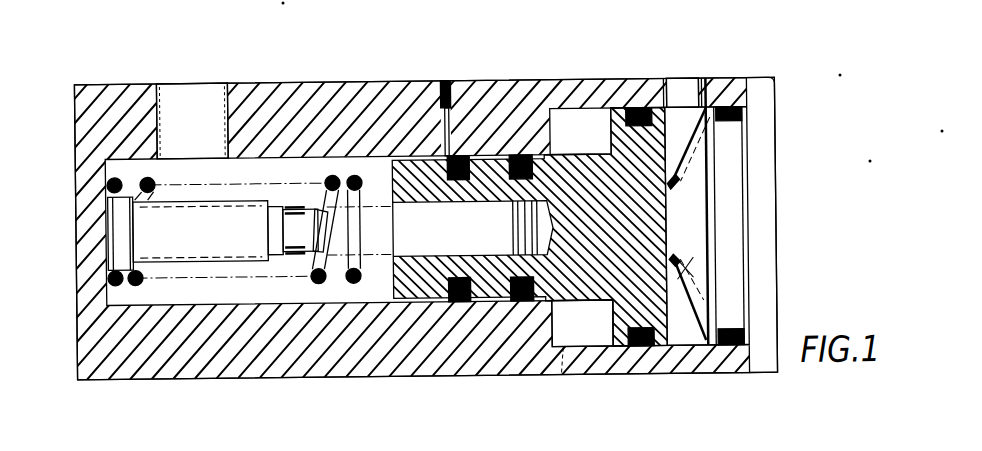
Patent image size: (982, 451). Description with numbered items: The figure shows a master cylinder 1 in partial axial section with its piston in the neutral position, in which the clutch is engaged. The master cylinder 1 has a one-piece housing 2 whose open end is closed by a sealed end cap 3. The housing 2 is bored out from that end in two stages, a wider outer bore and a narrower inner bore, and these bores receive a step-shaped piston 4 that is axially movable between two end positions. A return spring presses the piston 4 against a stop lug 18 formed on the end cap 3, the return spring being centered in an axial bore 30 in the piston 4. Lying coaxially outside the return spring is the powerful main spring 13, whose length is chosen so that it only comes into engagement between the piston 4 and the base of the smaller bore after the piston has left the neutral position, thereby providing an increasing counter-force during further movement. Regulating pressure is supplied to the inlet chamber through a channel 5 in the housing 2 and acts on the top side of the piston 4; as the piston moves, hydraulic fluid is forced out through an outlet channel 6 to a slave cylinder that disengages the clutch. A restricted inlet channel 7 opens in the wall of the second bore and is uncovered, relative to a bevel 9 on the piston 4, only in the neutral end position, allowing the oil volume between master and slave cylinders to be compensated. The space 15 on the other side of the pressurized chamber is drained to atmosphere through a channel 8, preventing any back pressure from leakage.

The master cylinder 1 is at (100, 50).
The housing 2 is at (328, 346).
The end cap 3 is at (776, 218).
The piston 4 is at (602, 185).
The channel 5 is at (685, 103).
The outlet channel 6 is at (188, 112).
The restricted inlet channel 7 is at (448, 81).
The channel 8 is at (560, 374).
The bevel 9 is at (424, 158).
The main spring 13 is at (333, 176).
The space 15 is at (591, 330).
The stop lug 18 is at (673, 275).
The axial bore 30 is at (431, 237).